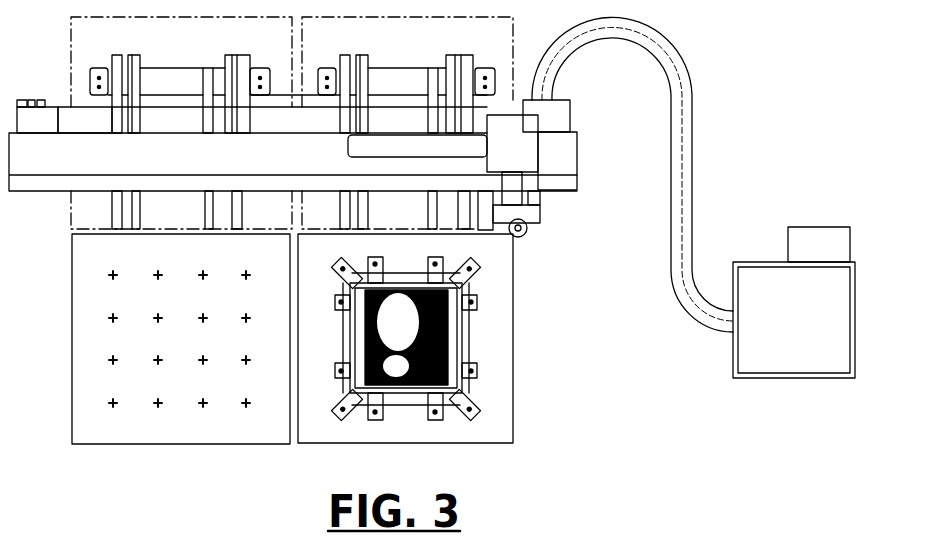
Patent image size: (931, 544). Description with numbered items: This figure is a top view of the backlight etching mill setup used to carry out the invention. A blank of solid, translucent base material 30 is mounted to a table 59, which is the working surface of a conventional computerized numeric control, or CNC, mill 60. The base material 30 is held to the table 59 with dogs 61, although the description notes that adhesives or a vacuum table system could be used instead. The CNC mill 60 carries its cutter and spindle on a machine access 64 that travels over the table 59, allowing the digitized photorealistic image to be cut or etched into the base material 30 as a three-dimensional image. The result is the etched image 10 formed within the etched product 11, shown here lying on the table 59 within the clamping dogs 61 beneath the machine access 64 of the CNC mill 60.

The etched image 10 is at (365, 355).
The etched product 11 is at (500, 295).
The base material 30 is at (348, 380).
The table 59 is at (470, 435).
The CNC mill 60 is at (766, 139).
The dogs 61 is at (473, 403).
The machine access 64 is at (522, 147).